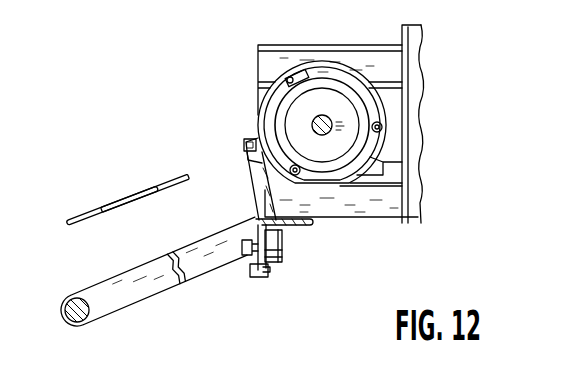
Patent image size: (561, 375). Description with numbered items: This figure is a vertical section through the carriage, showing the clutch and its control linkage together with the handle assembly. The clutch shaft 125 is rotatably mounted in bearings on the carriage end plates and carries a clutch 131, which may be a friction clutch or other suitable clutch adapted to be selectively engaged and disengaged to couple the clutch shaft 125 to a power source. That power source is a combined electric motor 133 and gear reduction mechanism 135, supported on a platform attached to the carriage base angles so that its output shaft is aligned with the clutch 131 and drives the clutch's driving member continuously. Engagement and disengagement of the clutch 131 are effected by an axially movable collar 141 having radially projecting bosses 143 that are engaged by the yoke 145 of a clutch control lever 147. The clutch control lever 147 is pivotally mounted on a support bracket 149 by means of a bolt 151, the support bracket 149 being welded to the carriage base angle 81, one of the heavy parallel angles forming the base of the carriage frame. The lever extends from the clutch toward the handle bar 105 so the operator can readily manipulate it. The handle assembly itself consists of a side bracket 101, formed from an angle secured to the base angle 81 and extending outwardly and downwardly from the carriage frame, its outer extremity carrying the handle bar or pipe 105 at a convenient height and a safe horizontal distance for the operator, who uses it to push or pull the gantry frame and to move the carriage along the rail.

The base angle 81 is at (310, 225).
The side bracket 101 is at (155, 288).
The handle bar 105 is at (77, 323).
The clutch shaft 125 is at (334, 131).
The clutch 131 is at (337, 72).
The electric motor 133 is at (410, 63).
The gear reduction mechanism 135 is at (288, 60).
The axially movable collar 141 is at (366, 112).
The radially projecting boss 143 is at (350, 182).
The yoke 145 is at (261, 110).
The clutch control lever 147 is at (141, 196).
The support bracket 149 is at (249, 180).
The bolt 151 is at (244, 143).